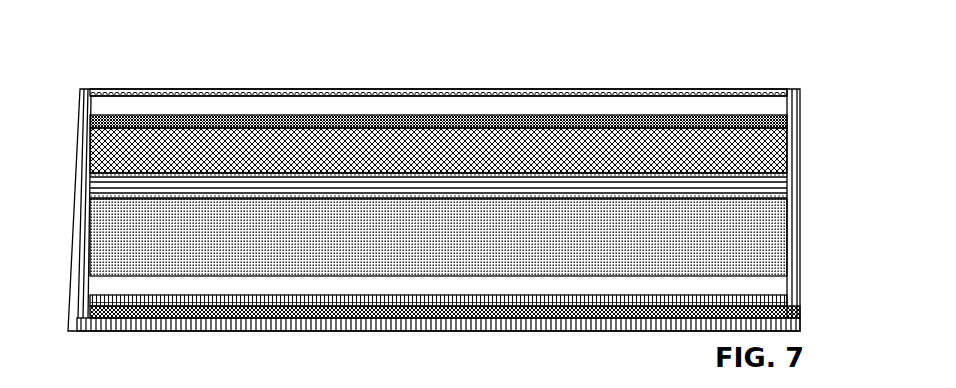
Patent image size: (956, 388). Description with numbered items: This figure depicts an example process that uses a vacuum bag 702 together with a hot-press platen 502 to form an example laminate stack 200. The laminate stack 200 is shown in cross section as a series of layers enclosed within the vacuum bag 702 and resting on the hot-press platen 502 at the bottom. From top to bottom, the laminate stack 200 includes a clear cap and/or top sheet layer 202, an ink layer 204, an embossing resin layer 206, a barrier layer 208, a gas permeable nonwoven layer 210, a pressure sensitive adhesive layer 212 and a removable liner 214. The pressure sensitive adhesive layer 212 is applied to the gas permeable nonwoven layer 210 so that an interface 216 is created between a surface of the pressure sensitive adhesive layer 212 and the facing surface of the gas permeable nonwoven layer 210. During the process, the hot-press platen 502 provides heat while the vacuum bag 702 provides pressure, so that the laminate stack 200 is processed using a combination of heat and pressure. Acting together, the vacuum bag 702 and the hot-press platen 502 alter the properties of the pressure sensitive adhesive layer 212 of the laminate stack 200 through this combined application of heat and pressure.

The laminate stack 200 is at (246, 40).
The vacuum bag 702 is at (160, 88).
The top sheet layer 202 is at (788, 101).
The ink layer 204 is at (787, 117).
The embossing resin layer 206 is at (788, 147).
The barrier layer 208 is at (788, 178).
The gas permeable nonwoven layer 210 is at (787, 240).
The pressure sensitive adhesive layer 212 is at (788, 280).
The removable liner 214 is at (788, 305).
The hot-press platen 502 is at (800, 317).
The interface 216 is at (100, 268).